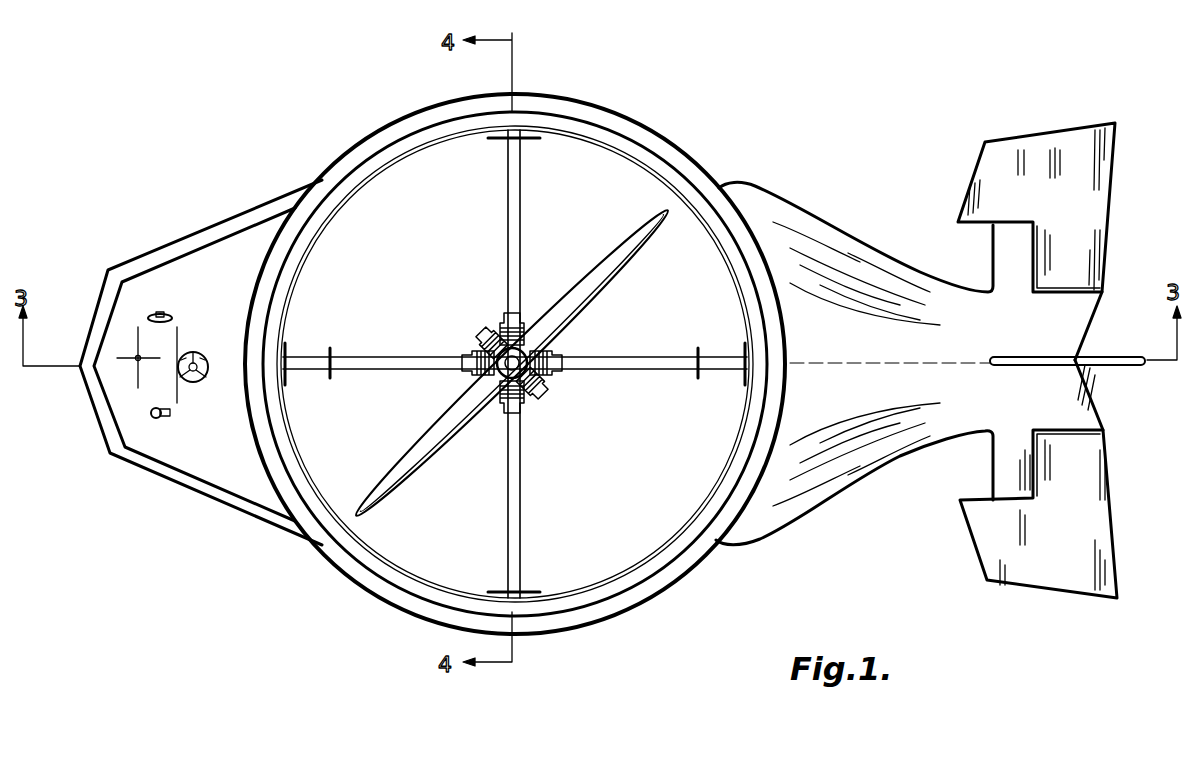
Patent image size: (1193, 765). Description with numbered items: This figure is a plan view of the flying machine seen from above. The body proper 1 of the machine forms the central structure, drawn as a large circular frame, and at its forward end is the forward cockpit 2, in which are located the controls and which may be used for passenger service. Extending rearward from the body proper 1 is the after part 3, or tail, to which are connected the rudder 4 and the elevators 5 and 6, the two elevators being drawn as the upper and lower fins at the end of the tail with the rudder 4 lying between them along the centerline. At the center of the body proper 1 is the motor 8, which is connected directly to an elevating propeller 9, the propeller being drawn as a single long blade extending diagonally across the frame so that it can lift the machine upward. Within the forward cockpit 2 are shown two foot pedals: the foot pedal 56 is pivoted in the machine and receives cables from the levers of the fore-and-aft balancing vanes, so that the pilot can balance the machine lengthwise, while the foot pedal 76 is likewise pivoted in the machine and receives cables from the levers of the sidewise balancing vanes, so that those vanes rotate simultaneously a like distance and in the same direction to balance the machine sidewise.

The body proper 1 is at (600, 112).
The forward cockpit 2 is at (195, 237).
The after part 3 is at (823, 237).
The rudder 4 is at (1120, 366).
The elevator 5 is at (1102, 522).
The elevator 6 is at (1103, 203).
The motor 8 is at (473, 327).
The elevating propeller 9 is at (623, 257).
The foot pedal 56 is at (168, 312).
The foot pedal 76 is at (172, 416).